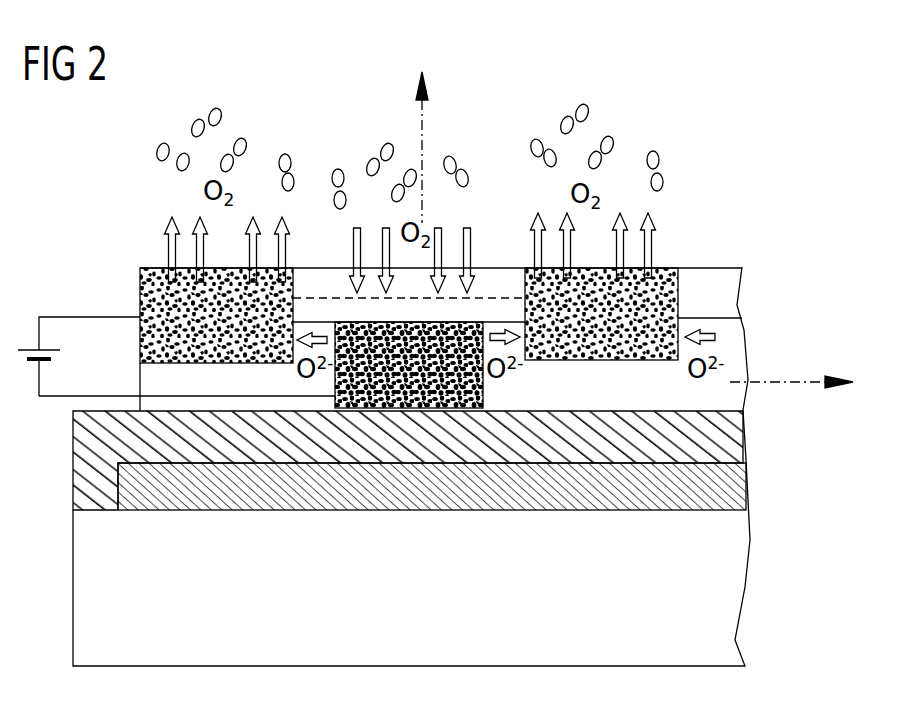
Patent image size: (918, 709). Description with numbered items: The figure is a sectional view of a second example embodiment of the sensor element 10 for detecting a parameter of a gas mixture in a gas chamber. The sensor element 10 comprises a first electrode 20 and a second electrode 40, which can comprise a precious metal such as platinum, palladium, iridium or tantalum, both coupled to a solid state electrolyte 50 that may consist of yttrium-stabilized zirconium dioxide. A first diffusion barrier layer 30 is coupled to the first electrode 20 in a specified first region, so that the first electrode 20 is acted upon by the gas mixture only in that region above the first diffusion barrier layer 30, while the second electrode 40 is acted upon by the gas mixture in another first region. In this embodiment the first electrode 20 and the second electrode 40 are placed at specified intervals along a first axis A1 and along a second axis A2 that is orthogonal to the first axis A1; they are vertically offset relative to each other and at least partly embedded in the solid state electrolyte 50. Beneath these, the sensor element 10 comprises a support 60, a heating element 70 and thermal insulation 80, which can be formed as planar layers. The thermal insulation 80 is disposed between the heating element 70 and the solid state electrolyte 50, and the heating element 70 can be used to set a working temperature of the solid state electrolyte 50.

The sensor element 10 is at (708, 138).
The first electrode 20 is at (468, 402).
The first diffusion barrier layer 30 is at (308, 272).
The second electrode 40 is at (664, 275).
The solid state electrolyte 50 is at (148, 381).
The support 60 is at (738, 587).
The heating element 70 is at (738, 490).
The thermal insulation 80 is at (738, 425).
The first axis A1 is at (779, 382).
The second axis A2 is at (424, 128).